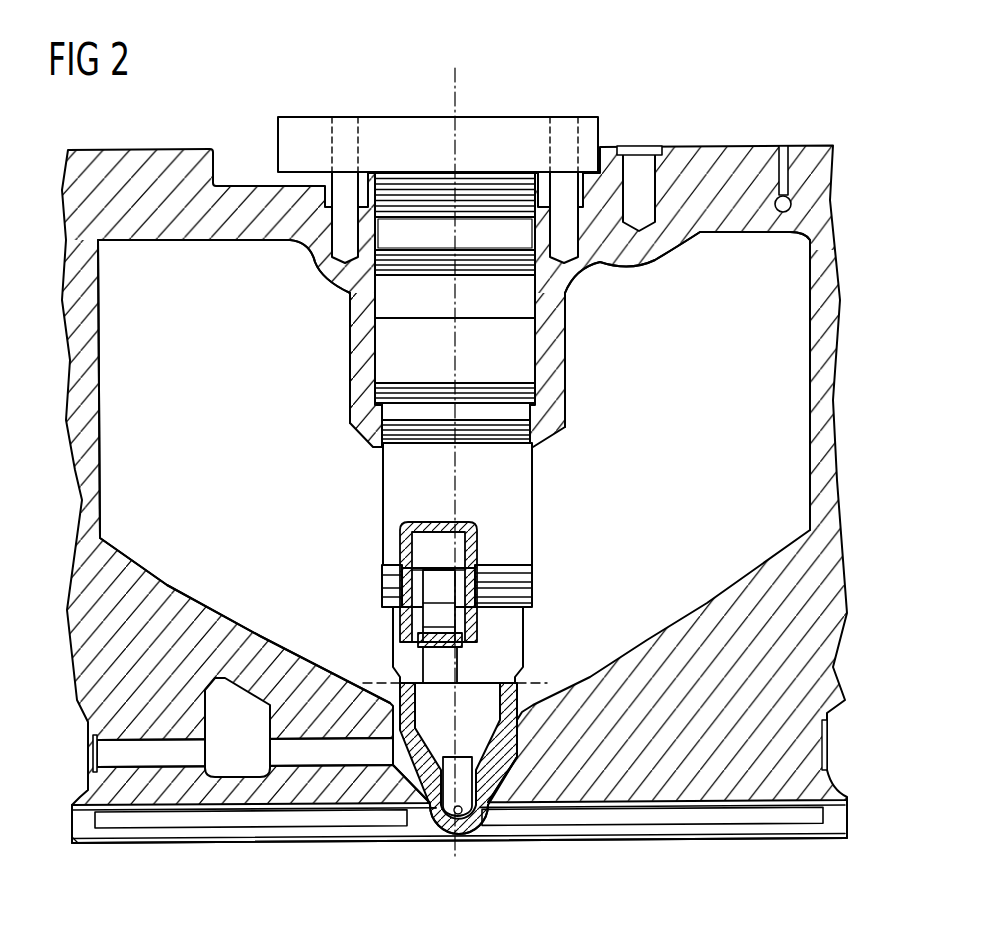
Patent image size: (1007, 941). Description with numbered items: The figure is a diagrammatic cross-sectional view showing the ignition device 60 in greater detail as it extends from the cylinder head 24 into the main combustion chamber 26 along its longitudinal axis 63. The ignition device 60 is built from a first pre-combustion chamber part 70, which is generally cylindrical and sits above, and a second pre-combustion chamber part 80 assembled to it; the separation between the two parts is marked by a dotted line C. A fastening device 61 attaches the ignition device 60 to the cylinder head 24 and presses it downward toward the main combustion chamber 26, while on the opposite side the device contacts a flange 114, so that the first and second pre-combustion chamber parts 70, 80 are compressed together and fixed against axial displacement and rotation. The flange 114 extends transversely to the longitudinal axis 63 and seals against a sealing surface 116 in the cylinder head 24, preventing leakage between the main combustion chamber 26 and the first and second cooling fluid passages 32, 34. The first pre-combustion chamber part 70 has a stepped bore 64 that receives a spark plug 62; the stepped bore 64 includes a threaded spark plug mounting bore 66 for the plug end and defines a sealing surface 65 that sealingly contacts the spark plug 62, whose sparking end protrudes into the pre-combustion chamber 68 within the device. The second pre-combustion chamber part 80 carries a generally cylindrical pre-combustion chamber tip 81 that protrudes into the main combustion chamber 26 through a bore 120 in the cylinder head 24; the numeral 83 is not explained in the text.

The cylinder head 24 is at (822, 558).
The main combustion chamber 26 is at (733, 893).
The first cooling fluid passage 32 is at (110, 757).
The second cooling fluid passage 34 is at (714, 344).
The ignition device 60 is at (288, 448).
The fastening device 61 is at (610, 130).
The spark plug 62 is at (432, 537).
The longitudinal axis 63 is at (458, 84).
The stepped bore 64 is at (413, 580).
The sealing surface 65 is at (407, 623).
The spark plug mounting bore 66 is at (440, 685).
The pre-combustion chamber 68 is at (490, 713).
The first pre-combustion chamber part 70 is at (552, 627).
The second pre-combustion chamber part 80 is at (517, 748).
The pre-combustion chamber tip 81 is at (467, 843).
The nozzle tip 83 is at (487, 818).
The flange 114 is at (408, 790).
The sealing surface 116 is at (533, 805).
The bore 120 is at (433, 841).
The dotted line C is at (392, 683).